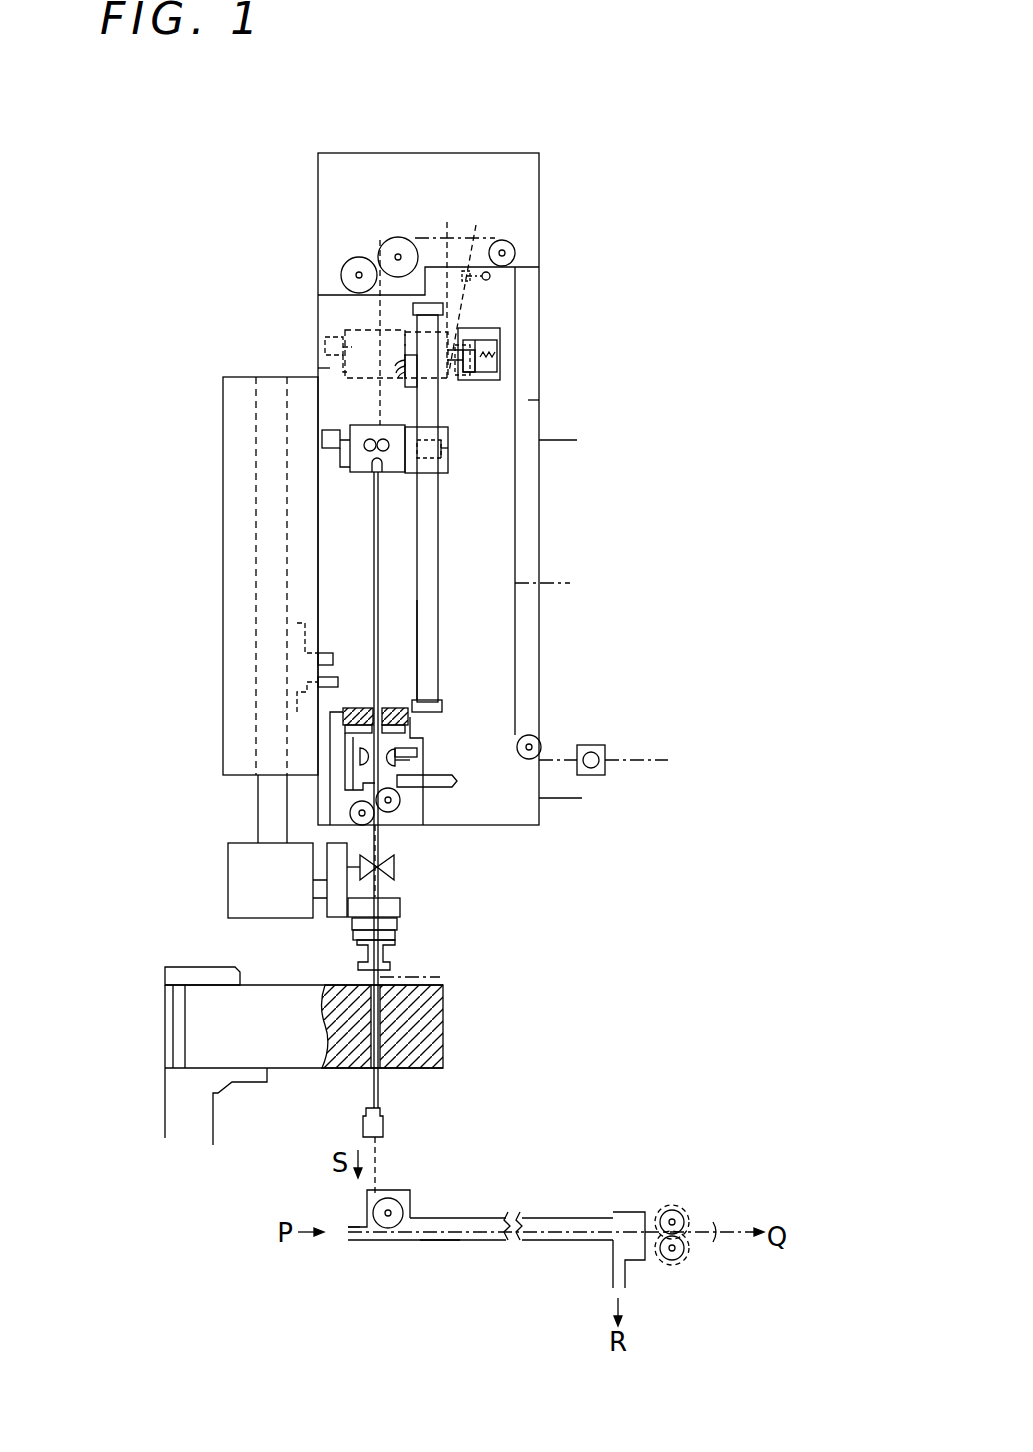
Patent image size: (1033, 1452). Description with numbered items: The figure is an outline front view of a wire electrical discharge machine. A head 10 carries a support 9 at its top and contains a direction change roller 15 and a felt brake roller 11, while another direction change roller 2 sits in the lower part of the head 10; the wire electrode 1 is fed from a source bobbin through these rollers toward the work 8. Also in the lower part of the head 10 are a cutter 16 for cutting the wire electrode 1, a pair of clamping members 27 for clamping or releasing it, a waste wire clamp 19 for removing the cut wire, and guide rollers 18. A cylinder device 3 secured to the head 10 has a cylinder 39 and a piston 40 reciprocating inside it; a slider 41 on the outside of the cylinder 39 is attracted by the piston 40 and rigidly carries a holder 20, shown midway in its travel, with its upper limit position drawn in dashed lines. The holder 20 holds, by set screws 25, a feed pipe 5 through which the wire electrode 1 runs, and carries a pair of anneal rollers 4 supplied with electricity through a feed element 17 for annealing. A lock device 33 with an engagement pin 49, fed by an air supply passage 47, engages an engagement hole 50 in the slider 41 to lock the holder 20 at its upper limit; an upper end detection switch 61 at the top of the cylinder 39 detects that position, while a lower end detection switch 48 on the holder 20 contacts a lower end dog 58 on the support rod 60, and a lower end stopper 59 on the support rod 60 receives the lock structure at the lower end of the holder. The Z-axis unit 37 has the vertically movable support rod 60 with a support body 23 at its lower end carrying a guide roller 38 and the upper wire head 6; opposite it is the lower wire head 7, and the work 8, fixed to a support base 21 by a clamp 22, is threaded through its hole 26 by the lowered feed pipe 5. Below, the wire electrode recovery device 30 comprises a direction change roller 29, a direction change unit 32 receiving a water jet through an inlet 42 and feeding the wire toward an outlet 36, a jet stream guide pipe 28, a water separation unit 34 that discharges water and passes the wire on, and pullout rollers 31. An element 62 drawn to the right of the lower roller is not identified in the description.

The wire electrode 1 is at (540, 1265).
The direction change roller 2 is at (541, 745).
The cylinder device 3 is at (433, 567).
The anneal rollers 4 is at (368, 438).
The feed pipe 5 is at (374, 596).
The upper wire head 6 is at (389, 952).
The lower wire head 7 is at (385, 1130).
The work 8 is at (432, 1025).
The support 9 is at (420, 195).
The head 10 is at (320, 368).
The felt brake roller 11 is at (342, 275).
The direction change roller 15 is at (380, 252).
The cutter 16 is at (408, 718).
The feed element 17 is at (411, 440).
The guide rollers 18 is at (375, 818).
The waste wire clamp 19 is at (450, 787).
The holder 20 is at (345, 331).
The support base 21 is at (205, 1127).
The clamp 22 is at (195, 975).
The support body 23 is at (233, 857).
The set screws 25 is at (375, 473).
The hole 26 is at (368, 1070).
The clamping members 27 is at (360, 757).
The jet stream guide pipe 28 is at (478, 1242).
The direction change roller 29 is at (387, 1229).
The wire electrode recovery device 30 is at (491, 1208).
The pullout rollers 31 is at (686, 1223).
The direction change unit 32 is at (398, 1190).
The lock device 33 is at (500, 336).
The water separation unit 34 is at (628, 1212).
The outlet 36 is at (430, 1242).
The Z-axis unit 37 is at (235, 527).
The guide roller 38 is at (395, 862).
The cylinder 39 is at (438, 642).
The piston 40 is at (450, 445).
The slider 41 is at (401, 492).
The inlet 42 is at (348, 1235).
The air supply passage 47 is at (490, 277).
The lower end detection switch 48 is at (325, 342).
The engagement pin 49 is at (468, 380).
The engagement hole 50 is at (472, 473).
The lower end dog 58 is at (318, 657).
The lower end stopper 59 is at (318, 683).
The support rod 60 is at (262, 808).
The upper end detection switch 61 is at (406, 357).
The drive 62 is at (598, 775).